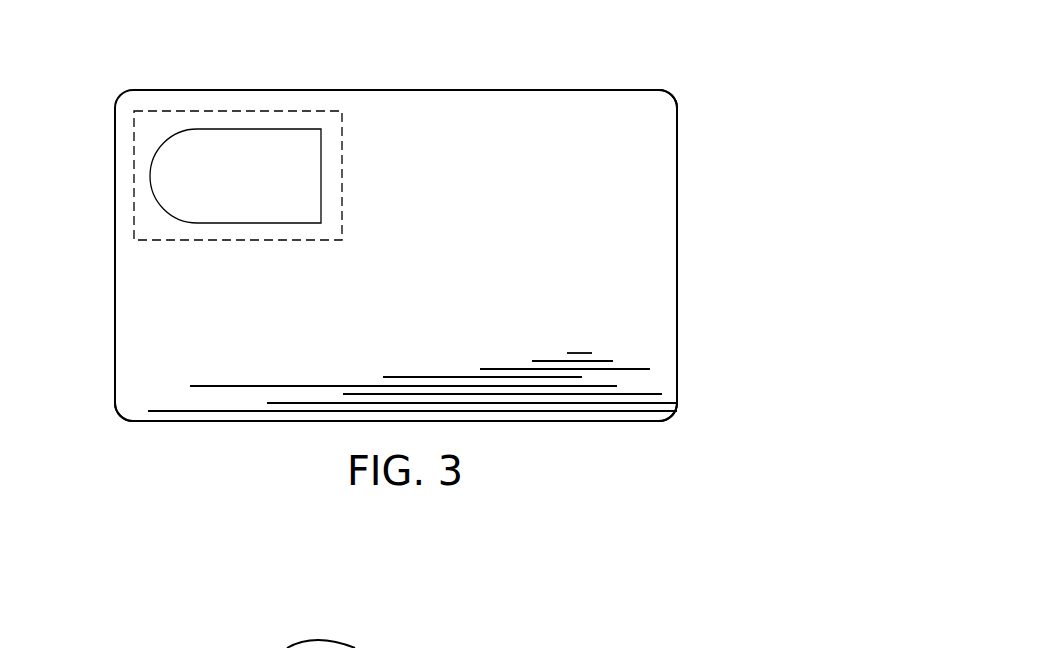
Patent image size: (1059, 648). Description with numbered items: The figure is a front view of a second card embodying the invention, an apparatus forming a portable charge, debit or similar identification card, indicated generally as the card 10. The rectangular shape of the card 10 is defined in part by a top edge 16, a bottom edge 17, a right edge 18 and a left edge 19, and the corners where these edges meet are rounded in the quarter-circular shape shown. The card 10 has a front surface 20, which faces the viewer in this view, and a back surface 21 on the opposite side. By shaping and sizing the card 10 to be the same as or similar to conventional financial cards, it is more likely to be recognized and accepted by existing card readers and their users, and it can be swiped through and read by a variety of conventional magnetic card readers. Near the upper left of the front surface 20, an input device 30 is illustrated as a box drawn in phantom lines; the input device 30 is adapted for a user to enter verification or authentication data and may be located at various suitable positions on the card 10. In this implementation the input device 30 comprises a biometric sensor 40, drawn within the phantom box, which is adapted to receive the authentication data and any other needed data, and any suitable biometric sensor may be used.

The card 10 is at (578, 45).
The top edge 16 is at (445, 89).
The bottom edge 17 is at (286, 422).
The right edge 18 is at (680, 355).
The left edge 19 is at (115, 368).
The front surface 20 is at (640, 263).
The back surface 21 is at (678, 124).
The input device 30 is at (215, 111).
The biometric sensor 40 is at (183, 195).